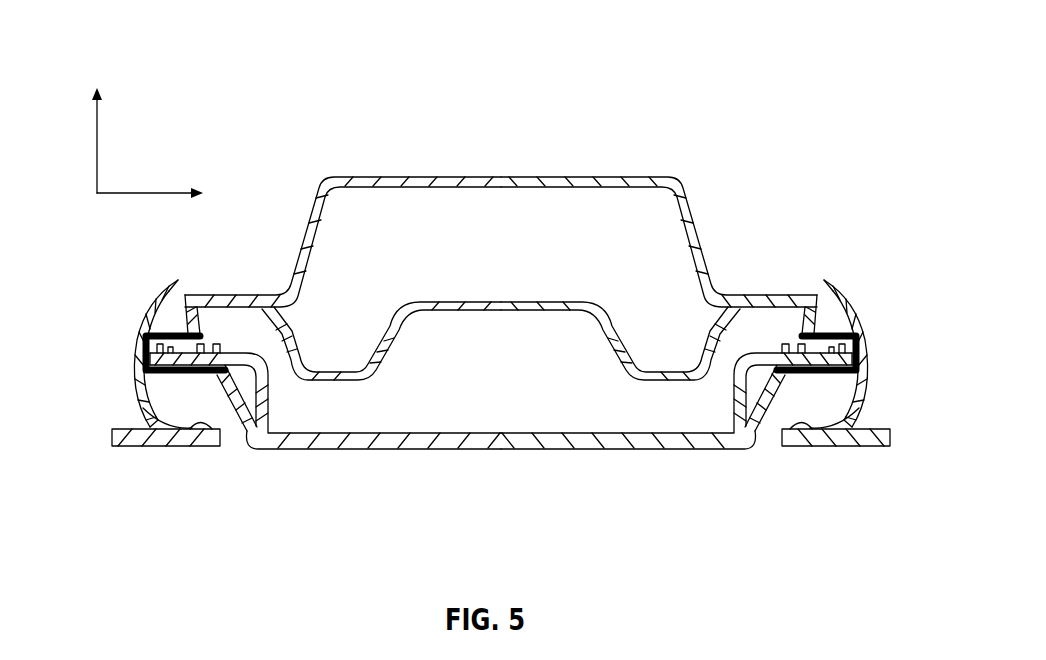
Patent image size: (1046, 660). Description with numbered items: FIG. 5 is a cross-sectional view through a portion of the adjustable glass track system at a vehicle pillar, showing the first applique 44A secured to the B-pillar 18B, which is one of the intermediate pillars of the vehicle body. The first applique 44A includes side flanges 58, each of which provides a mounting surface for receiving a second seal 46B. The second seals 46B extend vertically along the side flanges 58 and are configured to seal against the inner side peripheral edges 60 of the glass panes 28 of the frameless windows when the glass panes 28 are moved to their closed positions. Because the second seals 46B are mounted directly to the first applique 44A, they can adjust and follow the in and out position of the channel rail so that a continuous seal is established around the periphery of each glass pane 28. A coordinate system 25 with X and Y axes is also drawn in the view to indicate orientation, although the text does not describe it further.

The B-pillar 18B is at (488, 177).
The first applique 44A is at (465, 440).
The side flange 58 is at (232, 340).
The second seal 46B is at (125, 331).
The inner side peripheral edge 60 is at (190, 430).
The glass pane 28 is at (131, 454).
The coordinate system 25 is at (86, 206).